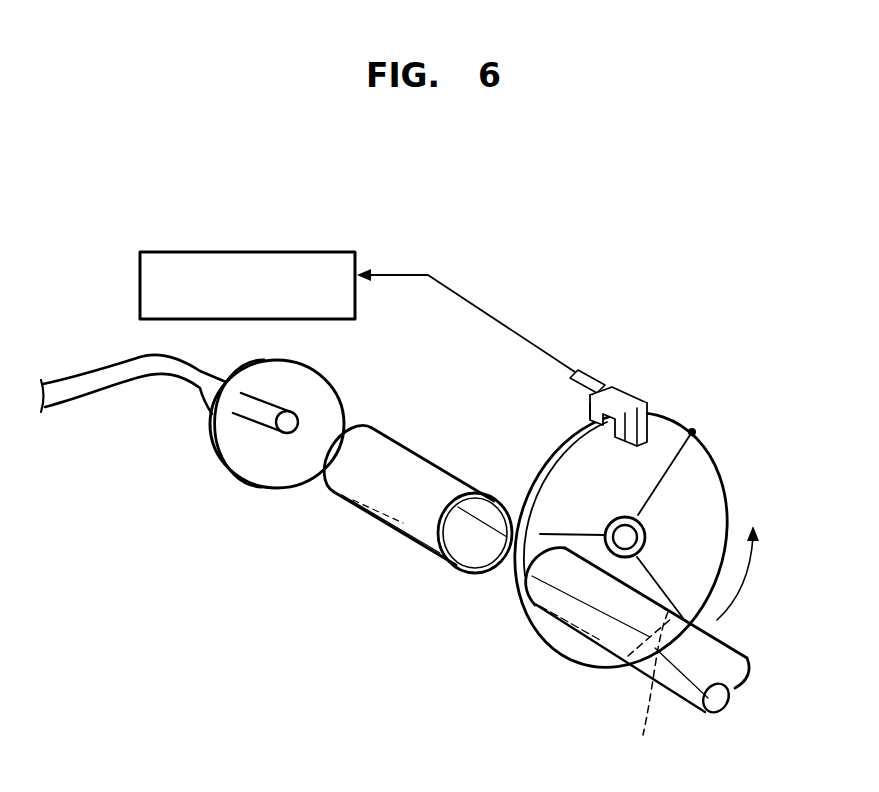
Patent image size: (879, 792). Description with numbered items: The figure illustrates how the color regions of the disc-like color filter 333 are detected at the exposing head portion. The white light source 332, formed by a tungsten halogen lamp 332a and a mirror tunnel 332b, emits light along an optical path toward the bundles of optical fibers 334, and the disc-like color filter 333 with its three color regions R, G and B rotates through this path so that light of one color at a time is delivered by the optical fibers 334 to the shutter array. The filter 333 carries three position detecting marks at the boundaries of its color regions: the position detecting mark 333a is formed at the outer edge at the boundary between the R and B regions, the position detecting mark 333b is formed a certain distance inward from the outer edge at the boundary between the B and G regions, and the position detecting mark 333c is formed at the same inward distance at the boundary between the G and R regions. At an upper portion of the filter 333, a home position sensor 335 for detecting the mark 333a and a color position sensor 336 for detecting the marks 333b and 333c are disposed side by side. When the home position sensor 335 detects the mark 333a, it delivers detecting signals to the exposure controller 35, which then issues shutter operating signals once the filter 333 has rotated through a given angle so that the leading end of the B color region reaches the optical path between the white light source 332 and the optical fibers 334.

The exposure controller 35 is at (140, 272).
The white light source 332 is at (276, 484).
The tungsten halogen lamp 332a is at (262, 432).
The mirror tunnel 332b is at (413, 509).
The disc-like color filter 333 is at (599, 570).
The position detecting mark 333a is at (694, 429).
The position detecting mark 333b is at (638, 696).
The position detecting mark 333c is at (533, 528).
The bundles of optical fibers 334 is at (717, 652).
The home position sensor 335 is at (590, 403).
The color position sensor 336 is at (620, 388).